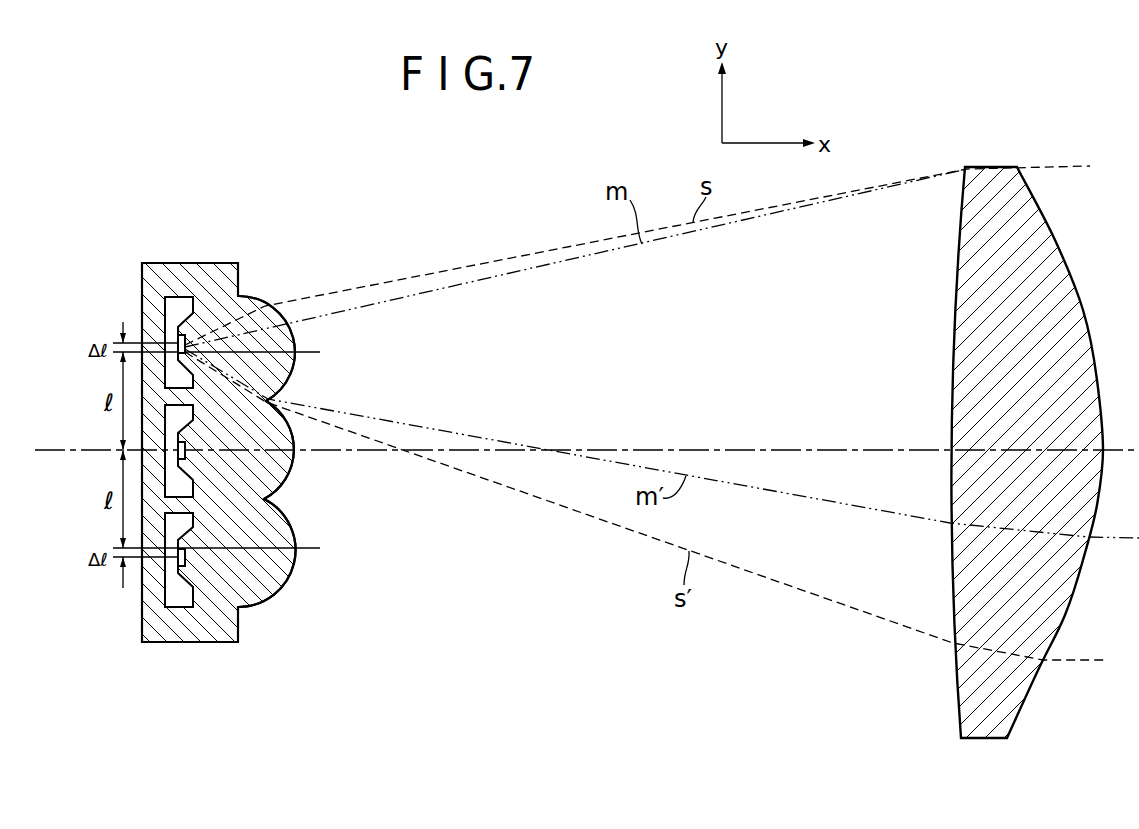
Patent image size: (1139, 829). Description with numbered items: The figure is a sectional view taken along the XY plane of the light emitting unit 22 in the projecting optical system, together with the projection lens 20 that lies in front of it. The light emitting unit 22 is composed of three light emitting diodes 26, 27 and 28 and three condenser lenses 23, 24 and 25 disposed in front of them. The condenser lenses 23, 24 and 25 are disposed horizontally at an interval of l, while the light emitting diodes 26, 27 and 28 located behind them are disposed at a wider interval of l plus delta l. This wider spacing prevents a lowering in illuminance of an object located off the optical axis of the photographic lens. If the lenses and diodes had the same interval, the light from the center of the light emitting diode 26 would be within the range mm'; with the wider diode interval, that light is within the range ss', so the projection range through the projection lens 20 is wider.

The projection lens 20 is at (1040, 268).
The light emitting unit 22 is at (188, 263).
The condenser lens 23 is at (293, 333).
The condenser lens 24 is at (294, 463).
The condenser lens 25 is at (291, 524).
The light emitting diode 26 is at (188, 320).
The light emitting diode 27 is at (189, 438).
The light emitting diode 28 is at (188, 546).